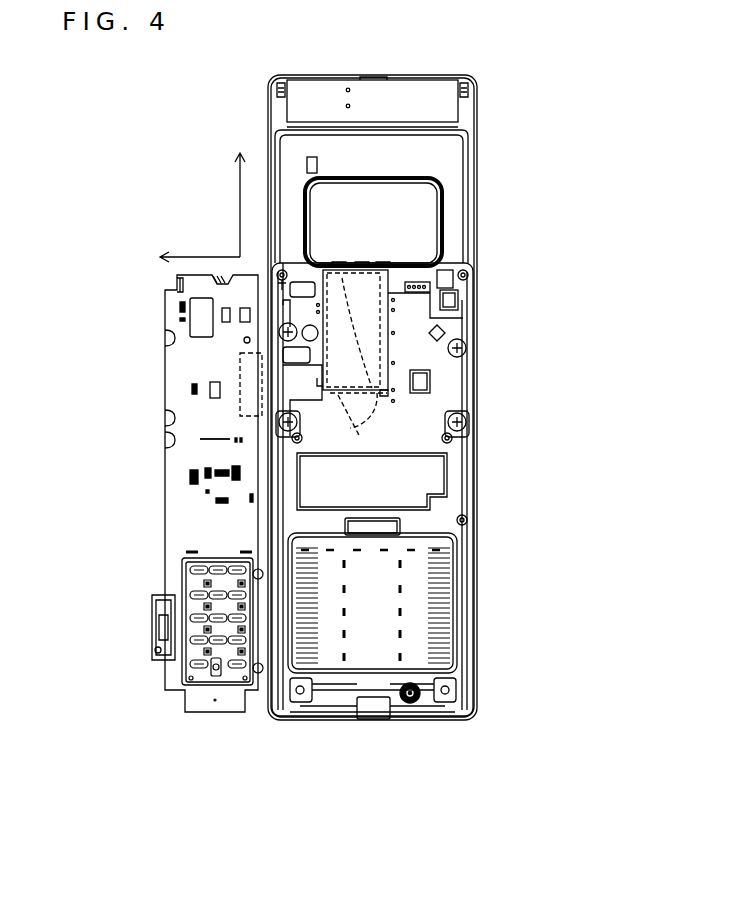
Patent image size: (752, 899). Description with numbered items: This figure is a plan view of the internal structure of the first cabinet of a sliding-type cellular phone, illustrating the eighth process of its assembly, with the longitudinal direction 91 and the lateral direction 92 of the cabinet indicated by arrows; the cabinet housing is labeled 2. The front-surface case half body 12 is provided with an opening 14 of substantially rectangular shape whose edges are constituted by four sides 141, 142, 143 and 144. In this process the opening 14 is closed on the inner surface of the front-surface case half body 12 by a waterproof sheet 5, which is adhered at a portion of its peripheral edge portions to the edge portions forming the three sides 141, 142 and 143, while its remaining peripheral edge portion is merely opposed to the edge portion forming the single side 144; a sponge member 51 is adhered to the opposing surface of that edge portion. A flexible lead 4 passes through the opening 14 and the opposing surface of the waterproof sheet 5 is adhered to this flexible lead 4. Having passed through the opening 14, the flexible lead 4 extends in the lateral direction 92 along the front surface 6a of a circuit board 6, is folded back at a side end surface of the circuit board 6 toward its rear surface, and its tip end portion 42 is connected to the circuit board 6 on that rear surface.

The housing 2 is at (478, 104).
The flexible lead 4 is at (365, 416).
The waterproof sheet 5 is at (372, 313).
The circuit board 6 is at (214, 700).
The front surface 6a is at (215, 429).
The front-surface case half body 12 is at (478, 399).
The opening 14 is at (383, 395).
The side 141 is at (343, 262).
The side 142 is at (363, 262).
The side 143 is at (383, 260).
The side 144 is at (353, 330).
The tip end portion 42 is at (240, 367).
The sponge member 51 is at (358, 425).
The longitudinal direction 91 is at (240, 190).
The lateral direction 92 is at (192, 257).